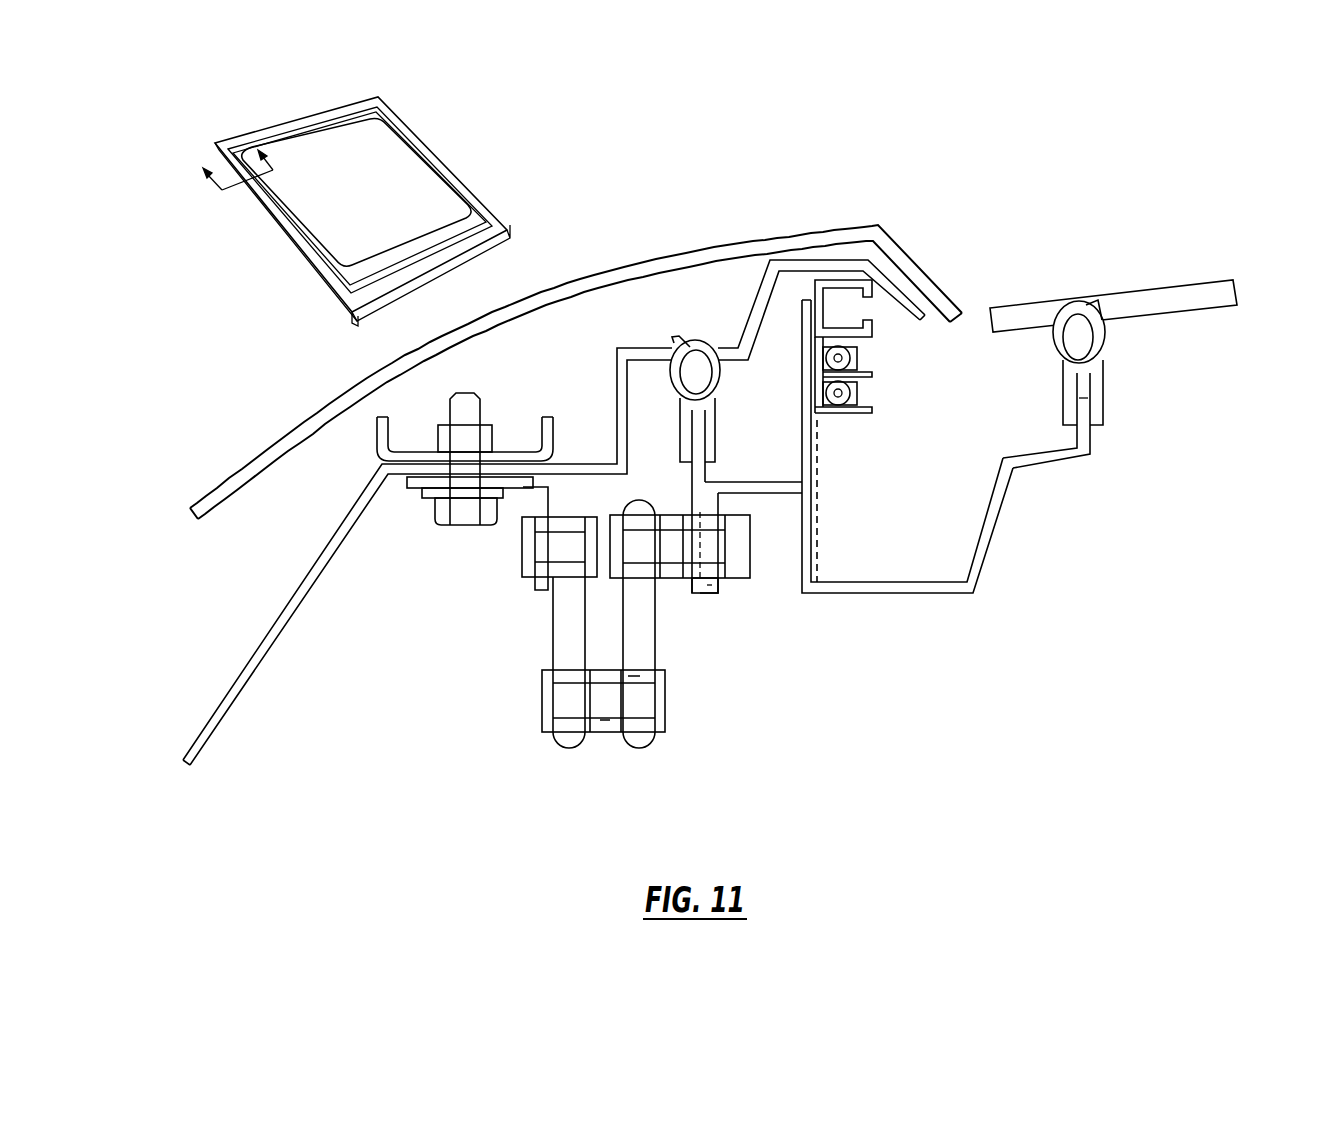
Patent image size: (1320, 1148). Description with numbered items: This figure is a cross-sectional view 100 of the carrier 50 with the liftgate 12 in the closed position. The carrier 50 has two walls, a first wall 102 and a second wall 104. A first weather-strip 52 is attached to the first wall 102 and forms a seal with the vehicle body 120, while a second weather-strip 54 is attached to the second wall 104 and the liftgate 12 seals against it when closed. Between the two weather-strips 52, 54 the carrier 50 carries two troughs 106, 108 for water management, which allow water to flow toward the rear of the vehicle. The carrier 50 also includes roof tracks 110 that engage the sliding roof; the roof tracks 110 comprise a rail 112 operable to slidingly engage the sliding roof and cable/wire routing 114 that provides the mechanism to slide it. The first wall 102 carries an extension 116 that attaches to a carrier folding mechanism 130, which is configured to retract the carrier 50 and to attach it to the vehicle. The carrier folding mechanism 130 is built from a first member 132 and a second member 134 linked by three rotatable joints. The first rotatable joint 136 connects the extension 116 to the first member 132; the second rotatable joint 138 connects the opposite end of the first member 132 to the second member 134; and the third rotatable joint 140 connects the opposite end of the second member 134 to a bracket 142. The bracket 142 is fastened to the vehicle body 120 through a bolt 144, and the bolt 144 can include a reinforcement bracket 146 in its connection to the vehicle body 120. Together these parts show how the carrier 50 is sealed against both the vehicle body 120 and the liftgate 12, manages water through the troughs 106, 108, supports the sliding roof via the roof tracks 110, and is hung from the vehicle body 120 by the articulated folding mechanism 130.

The liftgate 12 is at (1188, 284).
The carrier 50 is at (440, 131).
The first weather-strip 52 is at (723, 388).
The second weather-strip 54 is at (1107, 355).
The cross-sectional view 100 is at (231, 197).
The first wall 102 is at (692, 487).
The second wall 104 is at (1095, 442).
The first trough 106 is at (767, 463).
The second trough 108 is at (945, 528).
The roof tracks 110 is at (899, 374).
The rail 112 is at (853, 308).
The cable/wire routing 114 is at (878, 386).
The extension 116 is at (717, 593).
The vehicle body 120 is at (590, 274).
The carrier folding mechanism 130 is at (508, 769).
The first member 132 is at (653, 640).
The second member 134 is at (551, 642).
The first rotatable joint 136 is at (670, 578).
The second rotatable joint 138 is at (607, 733).
The third rotatable joint 140 is at (535, 580).
The bracket 142 is at (523, 487).
The bolt 144 is at (430, 523).
The reinforcement bracket 146 is at (410, 448).